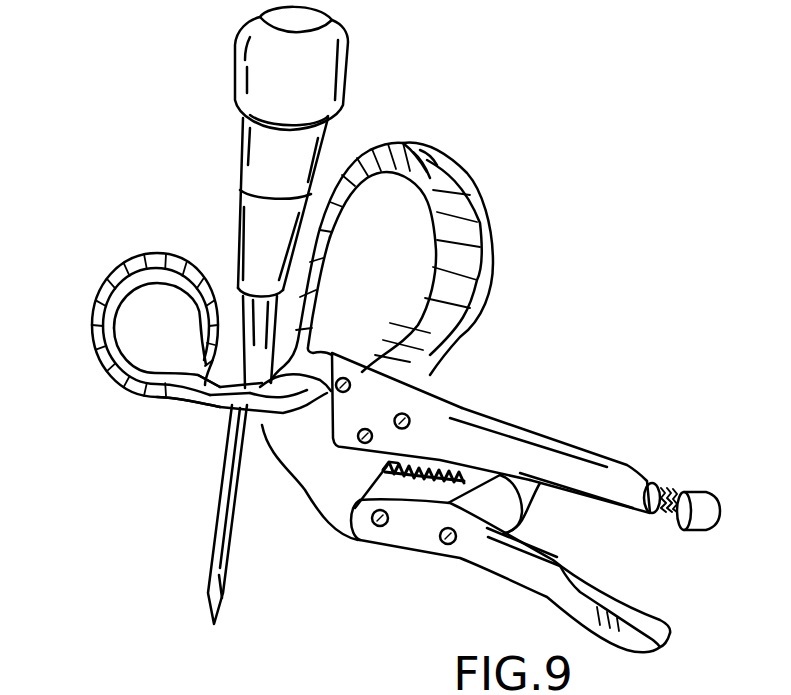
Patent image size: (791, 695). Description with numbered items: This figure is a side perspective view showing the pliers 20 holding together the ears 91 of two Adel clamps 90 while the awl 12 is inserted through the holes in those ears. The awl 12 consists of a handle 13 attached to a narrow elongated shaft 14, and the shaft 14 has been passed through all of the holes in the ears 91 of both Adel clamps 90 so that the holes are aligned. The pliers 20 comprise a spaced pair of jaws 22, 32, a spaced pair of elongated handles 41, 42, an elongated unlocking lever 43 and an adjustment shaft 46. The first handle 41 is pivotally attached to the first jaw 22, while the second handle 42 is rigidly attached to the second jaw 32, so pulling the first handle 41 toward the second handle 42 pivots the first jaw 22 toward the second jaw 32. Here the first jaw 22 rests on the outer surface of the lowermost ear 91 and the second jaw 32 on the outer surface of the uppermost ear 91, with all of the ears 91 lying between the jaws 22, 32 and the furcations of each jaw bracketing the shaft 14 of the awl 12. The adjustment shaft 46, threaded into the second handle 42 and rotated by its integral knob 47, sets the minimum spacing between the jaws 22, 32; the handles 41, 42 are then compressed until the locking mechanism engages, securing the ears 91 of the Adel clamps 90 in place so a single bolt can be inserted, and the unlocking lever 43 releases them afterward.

The awl 12 is at (286, 197).
The handle 13 is at (260, 72).
The shaft 14 is at (232, 473).
The pliers 20 is at (513, 502).
The first jaw 22 is at (227, 413).
The second jaw 32 is at (306, 321).
The first handle 41 is at (473, 555).
The second handle 42 is at (567, 452).
The unlocking lever 43 is at (627, 607).
The adjustment shaft 46 is at (676, 490).
The knob 47 is at (725, 506).
The Adel clamp 90 is at (137, 262).
The ears 91 is at (157, 407).